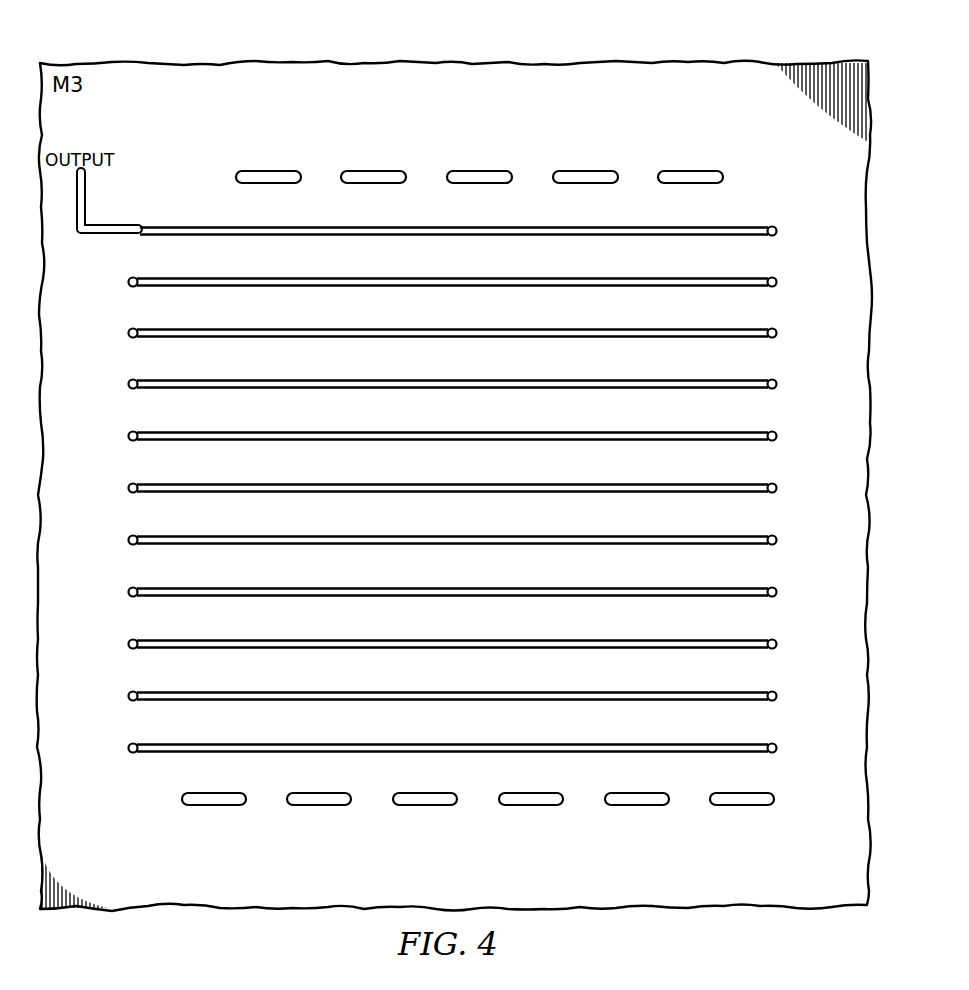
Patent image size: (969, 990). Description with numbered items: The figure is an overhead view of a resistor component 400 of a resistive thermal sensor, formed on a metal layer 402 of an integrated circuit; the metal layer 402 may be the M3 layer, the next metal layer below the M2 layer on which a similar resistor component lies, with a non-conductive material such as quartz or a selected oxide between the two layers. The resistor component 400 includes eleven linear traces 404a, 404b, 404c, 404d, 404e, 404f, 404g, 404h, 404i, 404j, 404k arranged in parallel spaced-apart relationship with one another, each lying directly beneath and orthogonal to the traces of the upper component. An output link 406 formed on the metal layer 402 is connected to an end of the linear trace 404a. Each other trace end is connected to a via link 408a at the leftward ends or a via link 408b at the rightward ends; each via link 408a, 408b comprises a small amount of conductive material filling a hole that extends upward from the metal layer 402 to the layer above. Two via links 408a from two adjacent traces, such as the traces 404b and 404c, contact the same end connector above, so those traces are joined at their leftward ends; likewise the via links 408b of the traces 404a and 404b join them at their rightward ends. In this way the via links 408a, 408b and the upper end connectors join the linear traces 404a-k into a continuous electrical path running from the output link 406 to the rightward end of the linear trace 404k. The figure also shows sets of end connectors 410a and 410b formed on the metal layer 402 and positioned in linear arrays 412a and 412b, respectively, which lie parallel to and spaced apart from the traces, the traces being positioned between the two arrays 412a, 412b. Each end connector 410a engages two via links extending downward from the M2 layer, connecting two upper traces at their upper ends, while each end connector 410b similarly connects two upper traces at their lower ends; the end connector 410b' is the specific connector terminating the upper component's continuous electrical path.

The resistor component 400 is at (161, 125).
The metal layer 402 is at (567, 61).
The linear trace 404a is at (750, 226).
The linear trace 404b is at (424, 277).
The linear trace 404c is at (505, 328).
The linear trace 404d is at (424, 379).
The linear trace 404e is at (505, 431).
The linear trace 404f is at (424, 483).
The linear trace 404g is at (505, 535).
The linear trace 404h is at (425, 587).
The linear trace 404i is at (505, 639).
The linear trace 404j is at (425, 691).
The linear trace 404k is at (505, 743).
The output link 406 is at (112, 222).
The via link 408a is at (129, 281).
The via link 408b is at (777, 230).
The end connector 410a is at (268, 170).
The end connector 410b is at (427, 824).
The end connector 410b' is at (746, 824).
The linear array 412a is at (227, 172).
The linear array 412b is at (179, 797).